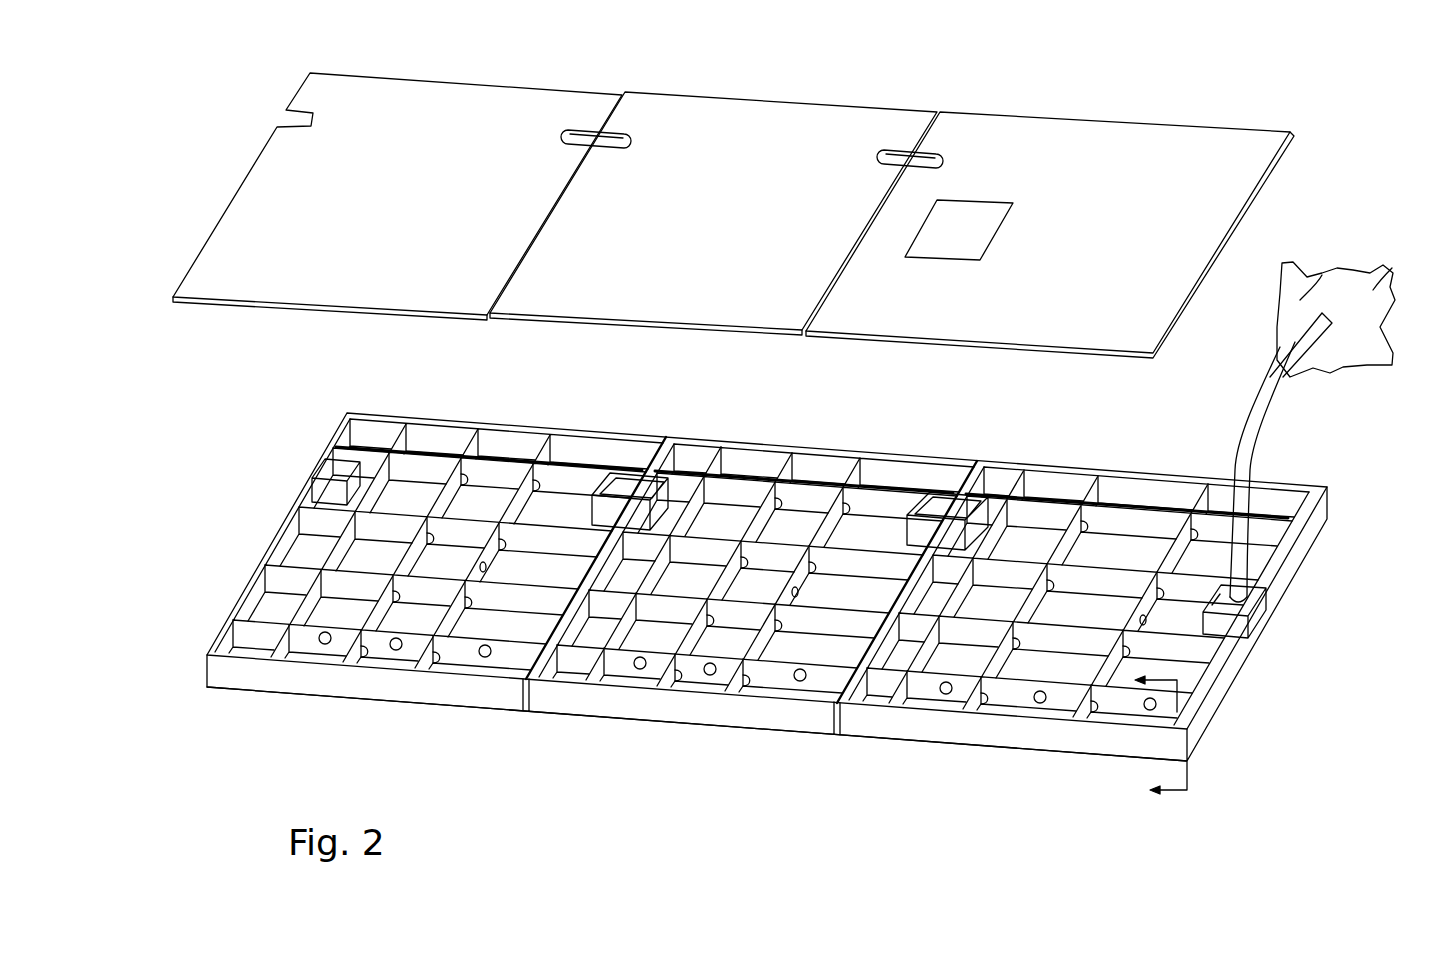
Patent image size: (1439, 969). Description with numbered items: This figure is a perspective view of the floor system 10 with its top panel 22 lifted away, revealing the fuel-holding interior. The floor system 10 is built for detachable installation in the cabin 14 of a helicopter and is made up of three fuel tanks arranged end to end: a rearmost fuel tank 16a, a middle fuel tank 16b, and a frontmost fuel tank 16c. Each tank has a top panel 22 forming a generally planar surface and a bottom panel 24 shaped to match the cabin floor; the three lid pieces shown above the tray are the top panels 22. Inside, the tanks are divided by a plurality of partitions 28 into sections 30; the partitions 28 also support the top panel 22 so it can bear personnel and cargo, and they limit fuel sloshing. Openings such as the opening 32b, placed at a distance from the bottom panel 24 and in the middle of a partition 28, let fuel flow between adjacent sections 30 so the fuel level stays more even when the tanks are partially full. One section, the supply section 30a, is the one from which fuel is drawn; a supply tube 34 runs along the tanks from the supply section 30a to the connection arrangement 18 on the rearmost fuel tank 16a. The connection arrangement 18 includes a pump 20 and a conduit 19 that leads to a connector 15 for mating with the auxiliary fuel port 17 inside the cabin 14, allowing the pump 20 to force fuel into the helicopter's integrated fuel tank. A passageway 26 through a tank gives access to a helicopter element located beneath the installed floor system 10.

The floor system 10 is at (145, 122).
The cabin 14 is at (1375, 290).
The connector 15 is at (1280, 350).
The rearmost fuel tank 16a is at (1096, 613).
The middle fuel tank 16b is at (756, 571).
The frontmost fuel tank 16c is at (439, 573).
The auxiliary fuel port 17 is at (1322, 320).
The connection arrangement 18 is at (781, 587).
The conduit 19 is at (1262, 603).
The pump 20 is at (1230, 615).
The top panel 22 is at (470, 103).
The bottom panel 24 is at (1070, 745).
The passageway 26 is at (1000, 600).
The partitions 28 is at (797, 507).
The sections 30 is at (783, 530).
The supply section 30a is at (345, 437).
The opening 32b is at (793, 593).
The supply tube 34 is at (440, 448).